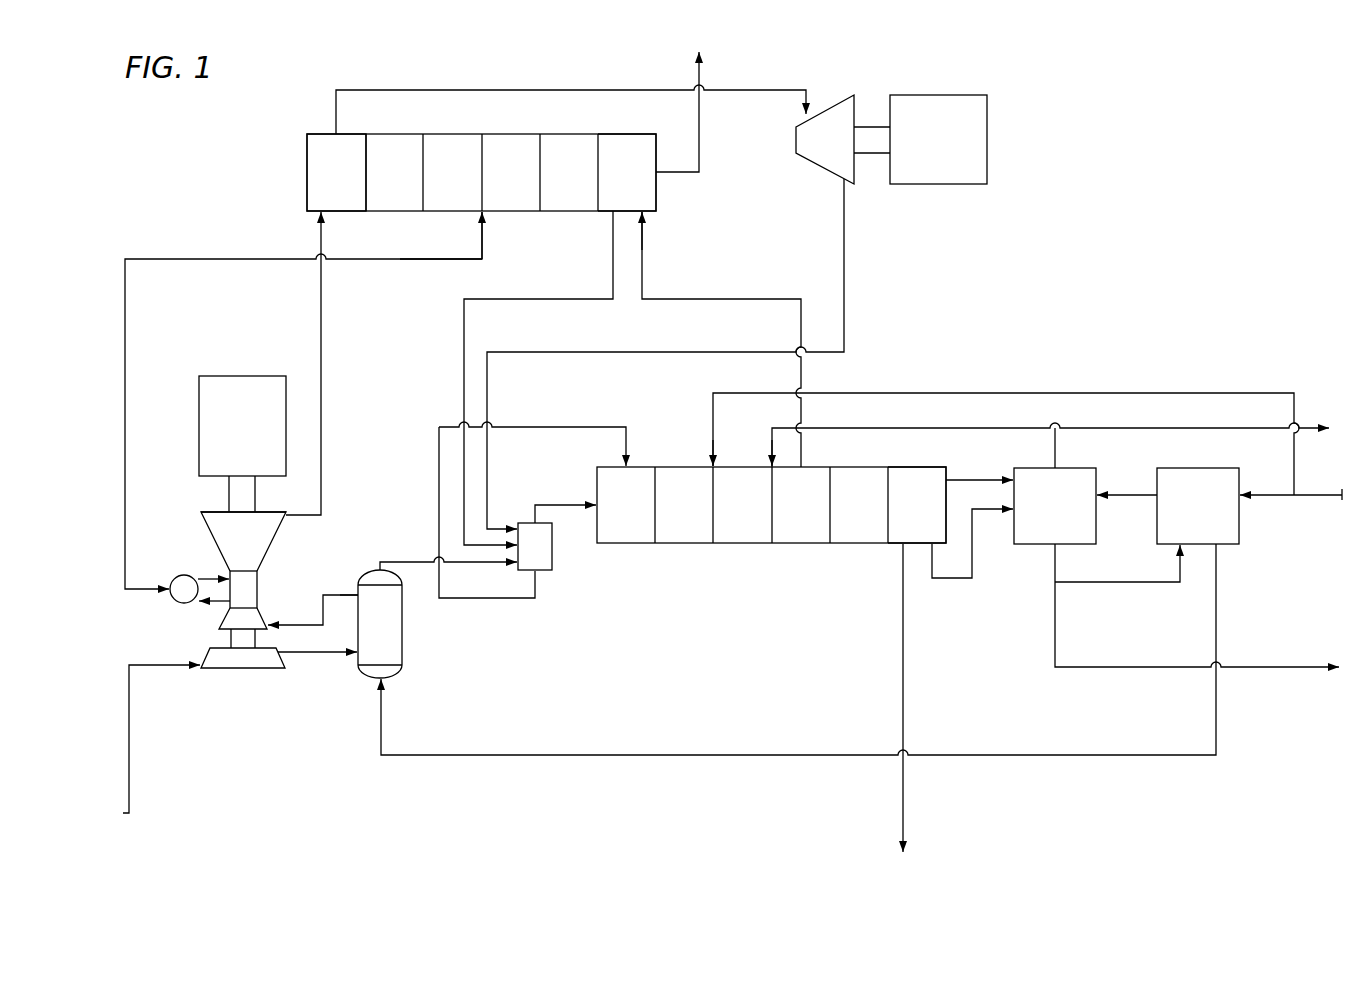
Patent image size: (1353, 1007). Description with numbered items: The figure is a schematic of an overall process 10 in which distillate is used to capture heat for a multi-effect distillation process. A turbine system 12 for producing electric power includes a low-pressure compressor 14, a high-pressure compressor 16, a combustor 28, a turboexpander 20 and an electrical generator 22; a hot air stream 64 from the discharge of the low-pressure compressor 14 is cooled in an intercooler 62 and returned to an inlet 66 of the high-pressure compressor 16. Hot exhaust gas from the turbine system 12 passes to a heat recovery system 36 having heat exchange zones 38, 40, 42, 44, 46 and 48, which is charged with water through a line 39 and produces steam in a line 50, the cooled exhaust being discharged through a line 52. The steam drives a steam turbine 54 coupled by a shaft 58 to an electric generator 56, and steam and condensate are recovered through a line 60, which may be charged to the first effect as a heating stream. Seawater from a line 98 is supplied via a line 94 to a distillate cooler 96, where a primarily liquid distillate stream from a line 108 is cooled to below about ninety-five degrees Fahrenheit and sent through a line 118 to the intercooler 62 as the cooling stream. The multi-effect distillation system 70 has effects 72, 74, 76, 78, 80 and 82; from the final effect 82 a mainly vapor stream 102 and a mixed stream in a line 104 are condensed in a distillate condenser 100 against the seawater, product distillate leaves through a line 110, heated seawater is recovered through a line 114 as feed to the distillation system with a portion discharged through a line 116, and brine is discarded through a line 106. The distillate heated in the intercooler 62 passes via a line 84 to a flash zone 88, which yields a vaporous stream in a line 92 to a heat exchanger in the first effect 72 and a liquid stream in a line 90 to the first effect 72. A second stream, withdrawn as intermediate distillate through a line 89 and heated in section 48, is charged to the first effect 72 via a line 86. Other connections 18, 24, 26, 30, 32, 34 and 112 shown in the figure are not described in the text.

The gasification system 10 is at (1028, 242).
The turbine system 12 is at (284, 550).
The low-pressure compressor 14 is at (258, 668).
The high-pressure compressor 16 is at (260, 618).
The feed neck 18 is at (231, 494).
The turboexpander 20 is at (208, 522).
The electrical generator 22 is at (233, 375).
The oxidant supply line 24 is at (130, 755).
The water supply line 26 is at (125, 366).
The combustor 28 is at (176, 603).
The return line 30 is at (218, 607).
The feed line 32 is at (206, 578).
The syngas line to heat recovery unit 34 is at (320, 294).
The heat recovery system 36 is at (292, 156).
The heat exchange zone 38 is at (323, 187).
The line 39 is at (406, 262).
The heat exchange zone 40 is at (382, 187).
The heat exchange zone 42 is at (439, 187).
The heat exchange zone 44 is at (498, 187).
The heat exchange zone 46 is at (556, 187).
The heat exchange zone 48 is at (614, 187).
The line 50 is at (478, 88).
The line 52 is at (701, 147).
The steam turbine 54 is at (830, 168).
The electric generator 56 is at (987, 108).
The shaft 58 is at (876, 150).
The line 60 is at (656, 353).
The intercooler 62 is at (400, 635).
The hot air stream 64 is at (307, 657).
The inlet 66 is at (348, 592).
The multi-effect distillation system 70 is at (732, 575).
The first effect 72 is at (613, 519).
The effect 74 is at (671, 519).
The effect 76 is at (729, 519).
The effect 78 is at (788, 519).
The effect 80 is at (846, 519).
The final effect 82 is at (904, 519).
The line 84 is at (487, 565).
The line 86 is at (462, 359).
The flash zone 88 is at (552, 569).
The line 89 is at (755, 300).
The line 90 is at (480, 600).
The line 92 is at (566, 502).
The line 94 is at (1312, 496).
The distillate cooler 96 is at (1237, 522).
The line 98 is at (1133, 494).
The distillate condenser 100 is at (1035, 520).
The stream 102 is at (987, 478).
The line 104 is at (947, 580).
The line 106 is at (900, 704).
The line 108 is at (1140, 580).
The line 110 is at (1143, 666).
The recycle line 112 is at (1138, 392).
The line 114 is at (1022, 427).
The line 116 is at (1190, 427).
The line 118 is at (1090, 757).